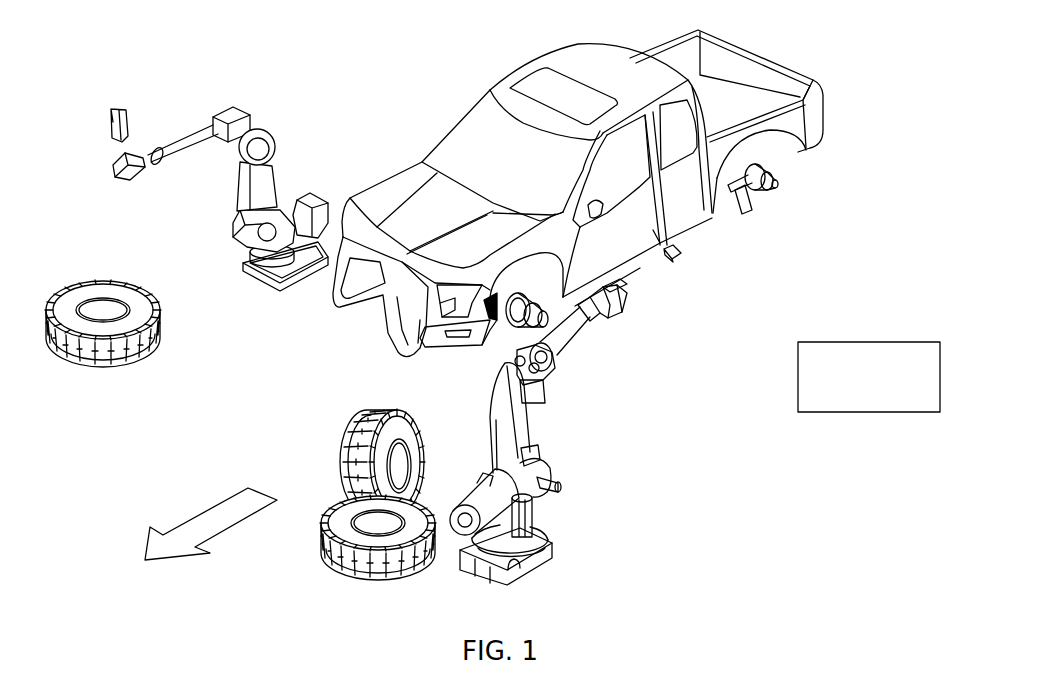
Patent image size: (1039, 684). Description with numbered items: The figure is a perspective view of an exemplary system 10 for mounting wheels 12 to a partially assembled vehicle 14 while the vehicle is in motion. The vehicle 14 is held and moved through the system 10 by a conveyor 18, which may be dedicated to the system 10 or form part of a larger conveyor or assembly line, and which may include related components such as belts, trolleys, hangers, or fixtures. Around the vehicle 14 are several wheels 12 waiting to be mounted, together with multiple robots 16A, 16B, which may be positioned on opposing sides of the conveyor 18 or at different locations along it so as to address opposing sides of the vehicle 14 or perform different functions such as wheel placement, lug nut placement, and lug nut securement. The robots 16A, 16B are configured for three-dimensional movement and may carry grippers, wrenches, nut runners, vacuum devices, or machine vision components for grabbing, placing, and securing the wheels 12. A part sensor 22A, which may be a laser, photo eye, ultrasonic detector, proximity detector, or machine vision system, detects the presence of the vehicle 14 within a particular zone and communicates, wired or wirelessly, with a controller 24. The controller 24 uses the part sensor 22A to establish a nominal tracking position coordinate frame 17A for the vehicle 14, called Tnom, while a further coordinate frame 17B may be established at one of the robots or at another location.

The system 10 is at (878, 98).
The wheels 12 is at (81, 337).
The partially assembled vehicle 14 is at (597, 62).
The robot 16A is at (507, 568).
The robot 16B is at (300, 210).
The nominal tracking position coordinate frame 17A is at (652, 371).
The coordinate frame 17B is at (567, 522).
The conveyor 18 is at (679, 256).
The part sensor 22A is at (151, 103).
The controller 24 is at (858, 388).